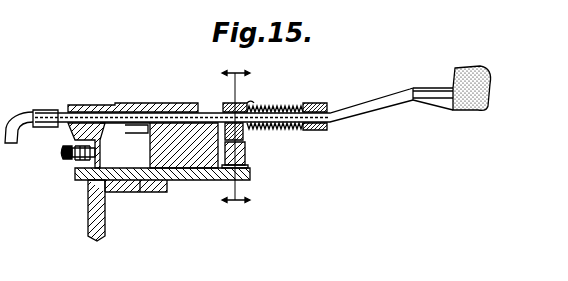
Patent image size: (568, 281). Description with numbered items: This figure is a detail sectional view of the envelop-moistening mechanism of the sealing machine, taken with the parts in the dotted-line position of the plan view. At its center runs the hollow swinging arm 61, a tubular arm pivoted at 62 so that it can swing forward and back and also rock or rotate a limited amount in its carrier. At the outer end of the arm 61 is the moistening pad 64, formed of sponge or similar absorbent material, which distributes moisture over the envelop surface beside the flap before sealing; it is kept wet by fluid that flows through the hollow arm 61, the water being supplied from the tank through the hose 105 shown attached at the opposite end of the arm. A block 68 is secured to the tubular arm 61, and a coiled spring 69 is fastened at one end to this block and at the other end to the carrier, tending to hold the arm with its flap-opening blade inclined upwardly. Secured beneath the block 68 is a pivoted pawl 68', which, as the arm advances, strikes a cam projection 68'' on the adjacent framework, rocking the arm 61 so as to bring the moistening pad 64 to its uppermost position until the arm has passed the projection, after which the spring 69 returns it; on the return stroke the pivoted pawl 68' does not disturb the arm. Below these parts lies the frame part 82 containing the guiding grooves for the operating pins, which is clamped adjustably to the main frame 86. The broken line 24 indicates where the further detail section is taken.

The hose 105 is at (23, 112).
The hollow swinging arm 61 is at (106, 105).
The moistening pad 64 is at (477, 67).
The block 68 is at (249, 106).
The pivoted pawl 68' is at (265, 153).
The cam projection 68'' is at (273, 179).
The coiled spring 69 is at (282, 108).
The frame part 82 is at (251, 181).
The main frame 86 is at (92, 234).
The pivot 62 is at (83, 163).
The broken line 24 24 is at (235, 143).